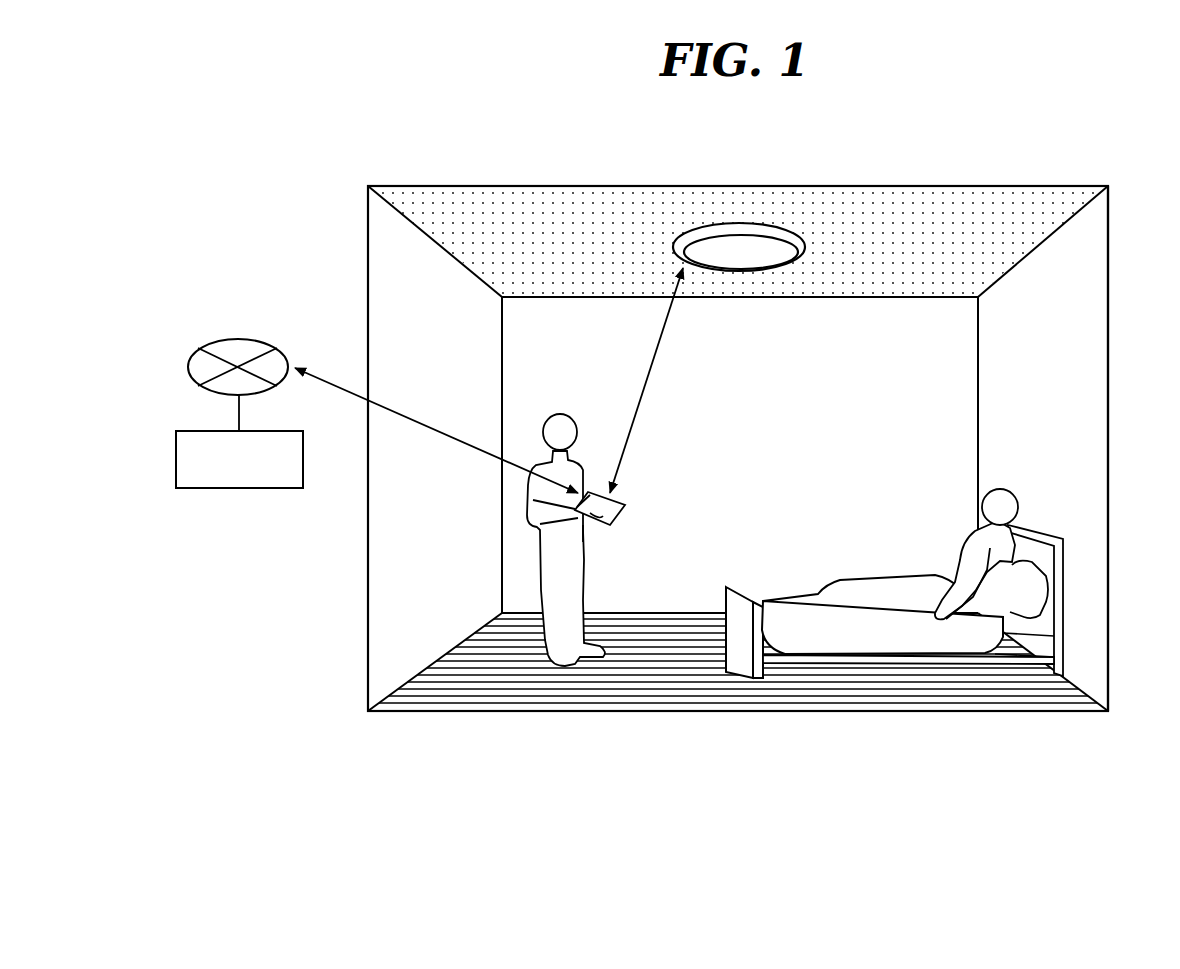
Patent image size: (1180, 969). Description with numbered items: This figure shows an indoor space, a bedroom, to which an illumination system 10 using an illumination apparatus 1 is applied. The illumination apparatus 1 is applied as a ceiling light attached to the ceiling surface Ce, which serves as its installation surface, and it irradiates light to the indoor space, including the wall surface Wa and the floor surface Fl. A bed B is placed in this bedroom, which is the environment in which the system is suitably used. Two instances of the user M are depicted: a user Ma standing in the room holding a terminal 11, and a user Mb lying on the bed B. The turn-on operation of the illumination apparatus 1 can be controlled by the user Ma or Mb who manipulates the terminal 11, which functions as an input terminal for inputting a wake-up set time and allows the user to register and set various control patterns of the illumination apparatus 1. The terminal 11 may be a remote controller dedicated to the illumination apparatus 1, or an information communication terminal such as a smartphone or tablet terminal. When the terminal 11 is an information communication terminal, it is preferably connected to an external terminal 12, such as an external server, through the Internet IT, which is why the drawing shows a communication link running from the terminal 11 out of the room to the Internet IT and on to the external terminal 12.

The illumination system 10 is at (370, 99).
The illumination apparatus 1 is at (762, 242).
The ceiling surface Ce is at (958, 205).
The wall surface Wa is at (1088, 432).
The floor surface Fl is at (948, 692).
The bed B is at (1022, 648).
The user Mb is at (1000, 543).
The user Ma is at (580, 557).
The terminal 11 is at (625, 505).
The Internet IT is at (238, 351).
The external terminal 12 is at (258, 429).